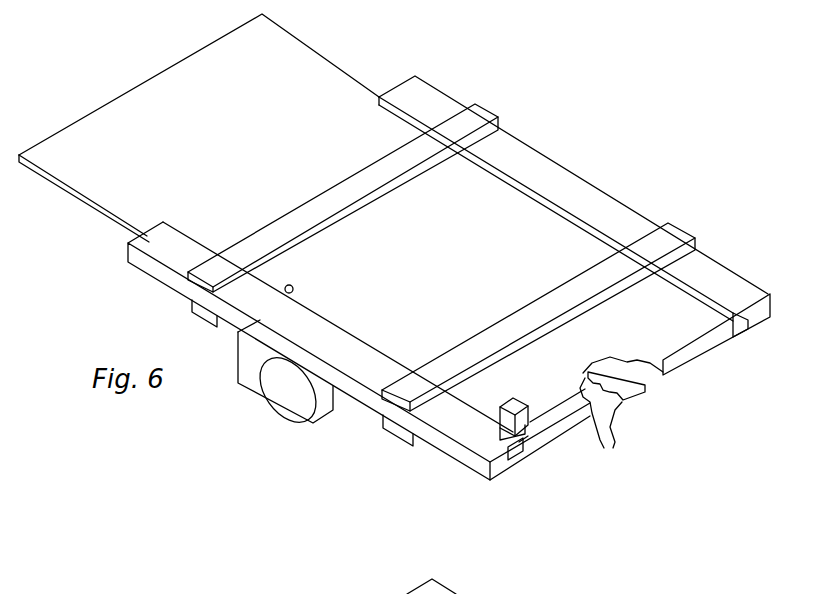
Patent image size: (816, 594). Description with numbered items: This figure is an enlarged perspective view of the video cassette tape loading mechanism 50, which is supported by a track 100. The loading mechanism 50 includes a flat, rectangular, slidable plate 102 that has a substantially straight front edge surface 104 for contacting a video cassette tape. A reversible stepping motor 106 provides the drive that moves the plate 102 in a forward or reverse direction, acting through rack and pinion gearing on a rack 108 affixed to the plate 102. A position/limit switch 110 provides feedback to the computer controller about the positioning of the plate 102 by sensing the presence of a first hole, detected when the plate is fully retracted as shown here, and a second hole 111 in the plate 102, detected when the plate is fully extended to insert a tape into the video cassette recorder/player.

The loading mechanism 50 is at (148, 80).
The track 100 is at (451, 278).
The slidable plate 102 is at (305, 97).
The front edge surface 104 is at (703, 354).
The reversible stepping motor 106 is at (292, 400).
The rack 108 is at (604, 448).
The position/limit switch 110 is at (506, 421).
The second hole 111 is at (294, 289).